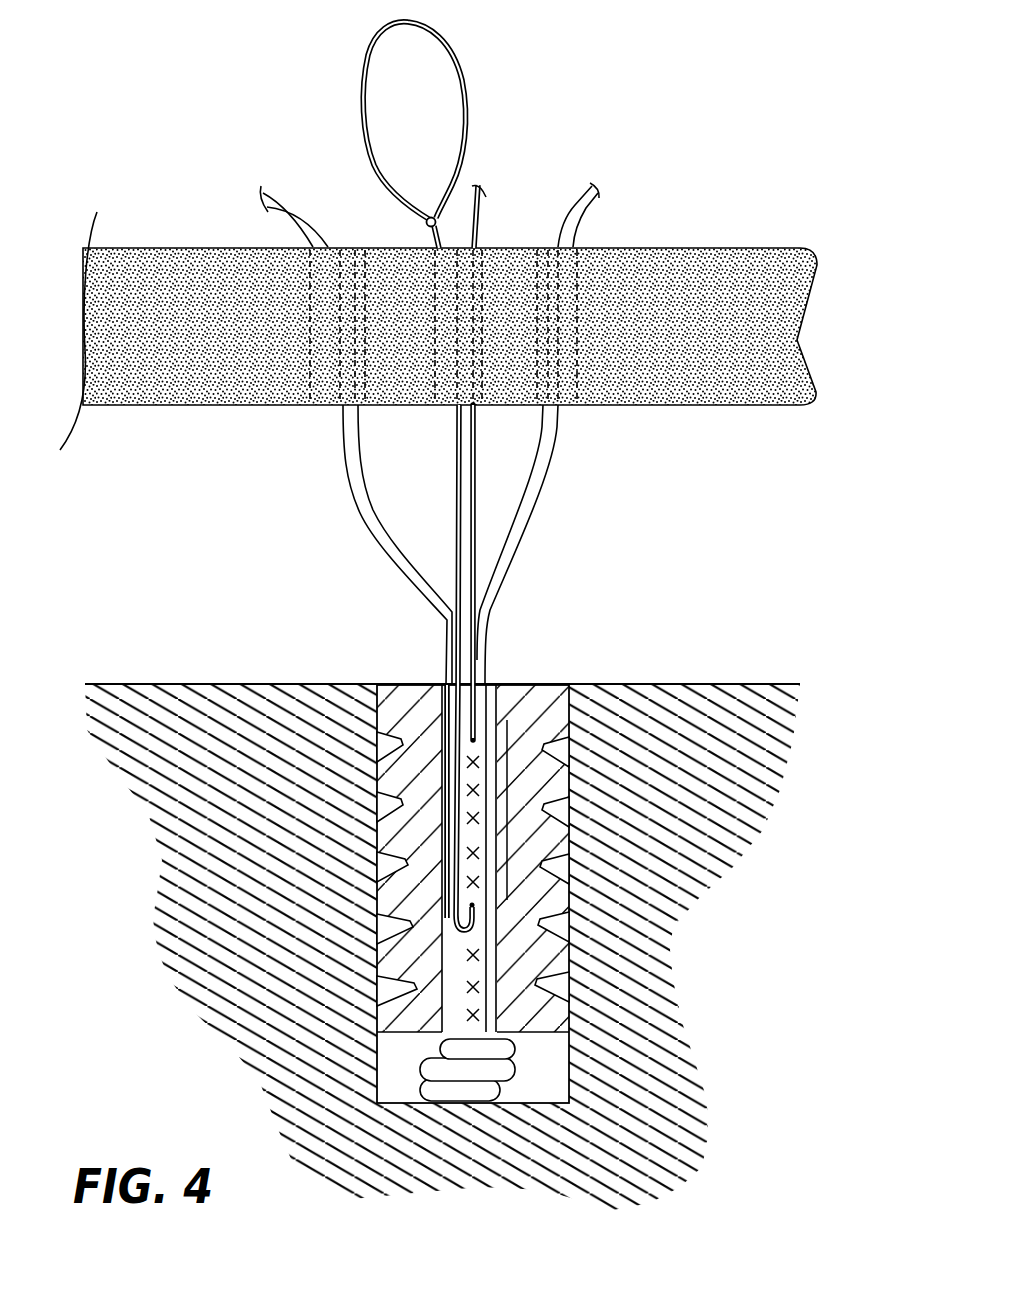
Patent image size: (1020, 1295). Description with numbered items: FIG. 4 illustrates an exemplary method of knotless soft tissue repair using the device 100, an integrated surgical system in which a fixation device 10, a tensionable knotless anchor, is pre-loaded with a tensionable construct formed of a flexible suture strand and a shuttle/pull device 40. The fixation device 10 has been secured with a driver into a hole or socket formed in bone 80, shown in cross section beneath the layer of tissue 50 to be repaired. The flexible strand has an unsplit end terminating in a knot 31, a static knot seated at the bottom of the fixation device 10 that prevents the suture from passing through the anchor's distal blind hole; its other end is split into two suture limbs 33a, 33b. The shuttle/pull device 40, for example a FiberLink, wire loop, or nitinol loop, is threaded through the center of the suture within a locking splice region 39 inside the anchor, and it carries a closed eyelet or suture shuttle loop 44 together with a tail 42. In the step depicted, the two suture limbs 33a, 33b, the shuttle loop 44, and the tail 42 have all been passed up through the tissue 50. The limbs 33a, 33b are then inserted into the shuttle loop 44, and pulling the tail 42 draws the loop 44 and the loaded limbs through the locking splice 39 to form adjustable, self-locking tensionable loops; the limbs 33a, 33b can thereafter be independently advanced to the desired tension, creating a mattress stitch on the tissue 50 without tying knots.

The device 100 is at (222, 63).
The tissue 50 is at (668, 335).
The bone 80 is at (662, 773).
The fixation device 10 is at (560, 1025).
The splice region 39 is at (508, 800).
The knot 31 is at (500, 1080).
The limb 33a is at (293, 195).
The limb 33b is at (573, 203).
The closed eyelet/loop 44 is at (423, 90).
The tail 42 is at (481, 201).
The shuttle/pull device 40 is at (427, 221).